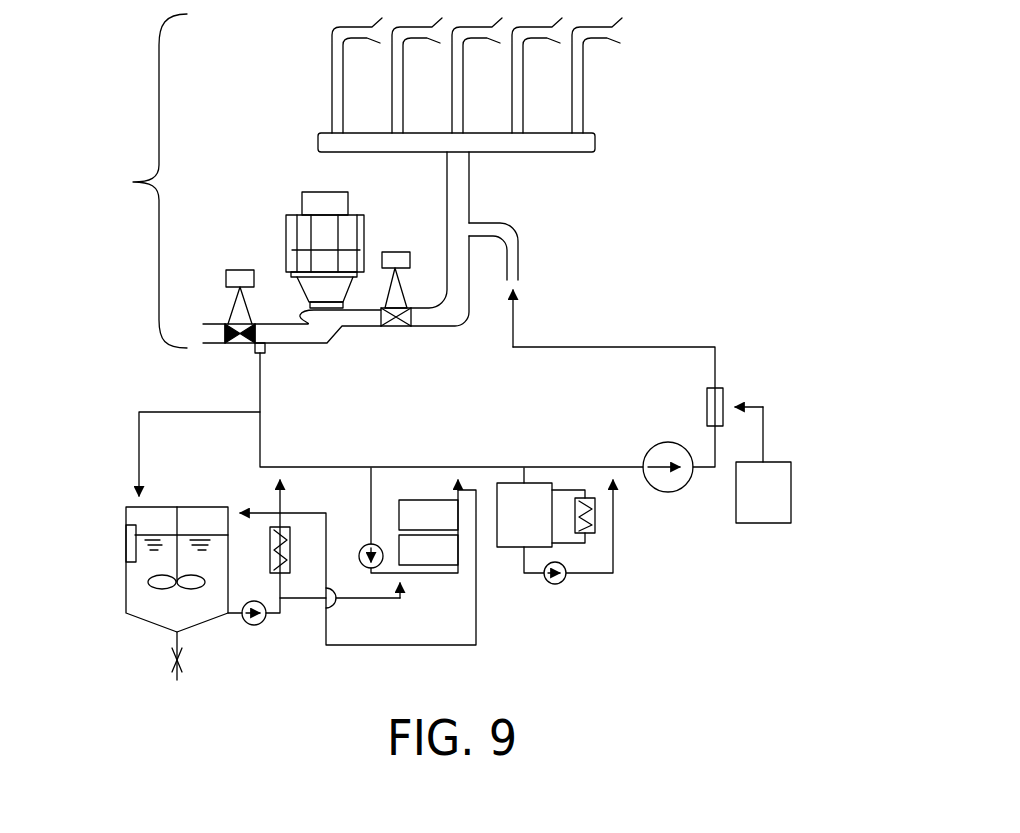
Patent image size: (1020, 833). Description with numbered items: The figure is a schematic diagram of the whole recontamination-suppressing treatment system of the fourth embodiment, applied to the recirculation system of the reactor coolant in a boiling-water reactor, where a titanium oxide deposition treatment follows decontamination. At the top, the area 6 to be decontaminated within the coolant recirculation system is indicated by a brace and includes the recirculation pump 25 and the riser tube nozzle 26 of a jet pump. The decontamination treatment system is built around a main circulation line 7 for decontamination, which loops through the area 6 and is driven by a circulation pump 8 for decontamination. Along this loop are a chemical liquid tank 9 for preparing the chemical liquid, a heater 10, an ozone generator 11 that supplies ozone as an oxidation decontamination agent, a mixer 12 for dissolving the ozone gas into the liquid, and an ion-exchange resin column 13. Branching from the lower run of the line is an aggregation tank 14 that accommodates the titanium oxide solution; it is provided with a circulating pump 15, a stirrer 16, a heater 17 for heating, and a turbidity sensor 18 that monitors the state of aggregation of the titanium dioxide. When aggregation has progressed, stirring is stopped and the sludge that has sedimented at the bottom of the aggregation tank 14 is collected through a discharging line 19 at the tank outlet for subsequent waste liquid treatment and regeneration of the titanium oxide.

The area to be decontaminated 6 is at (354, 183).
The riser tube nozzle 26 is at (583, 95).
The recirculation pump 25 is at (292, 212).
The main circulation line for decontamination 7 is at (697, 347).
The mixer 12 is at (723, 390).
The circulation pump for decontamination 8 is at (667, 492).
The ozone generator 11 is at (763, 523).
The chemical liquid tank 9 is at (512, 547).
The heater 10 is at (588, 533).
The ion-exchange resin column 13 is at (445, 545).
The aggregation tank 14 is at (126, 577).
The turbidity sensor 18 is at (126, 543).
The stirrer 16 is at (153, 588).
The discharging line 19 is at (175, 663).
The circulating pump 15 is at (254, 624).
The heater for heating 17 is at (277, 575).